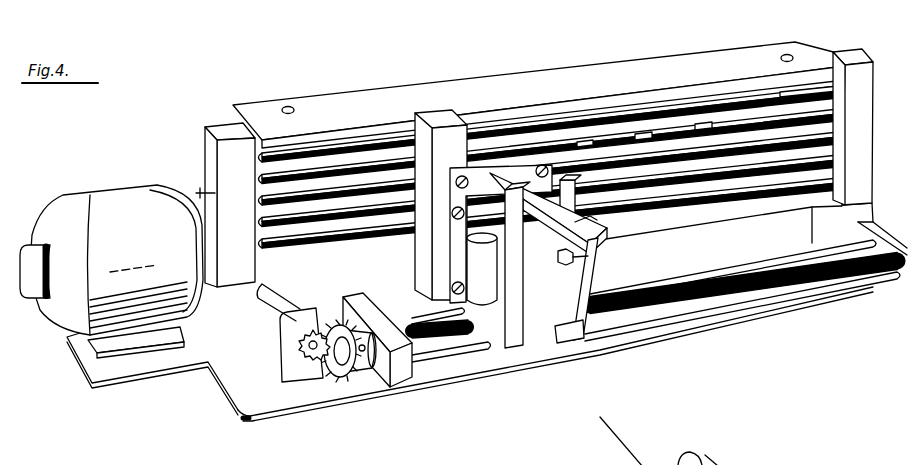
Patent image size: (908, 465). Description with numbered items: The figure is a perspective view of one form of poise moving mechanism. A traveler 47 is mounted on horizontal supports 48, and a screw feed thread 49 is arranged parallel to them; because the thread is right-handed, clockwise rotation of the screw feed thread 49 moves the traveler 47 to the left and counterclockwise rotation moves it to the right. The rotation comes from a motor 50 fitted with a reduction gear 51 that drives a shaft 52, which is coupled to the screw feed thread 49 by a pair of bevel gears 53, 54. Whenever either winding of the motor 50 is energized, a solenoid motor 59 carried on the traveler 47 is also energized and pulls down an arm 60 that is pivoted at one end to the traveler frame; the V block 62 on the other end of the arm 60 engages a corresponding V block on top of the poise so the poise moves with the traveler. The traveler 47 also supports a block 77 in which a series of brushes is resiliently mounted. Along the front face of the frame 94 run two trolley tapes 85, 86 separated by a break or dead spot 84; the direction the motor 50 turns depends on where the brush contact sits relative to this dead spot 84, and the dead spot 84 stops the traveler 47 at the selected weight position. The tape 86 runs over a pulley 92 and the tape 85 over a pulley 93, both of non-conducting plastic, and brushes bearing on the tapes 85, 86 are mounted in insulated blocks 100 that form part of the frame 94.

The traveler 47 is at (551, 299).
The horizontal supports 48 is at (785, 261).
The screw feed thread 49 is at (805, 283).
The motor 50 is at (143, 245).
The reduction gear 51 is at (200, 193).
The shaft 52 is at (277, 302).
The bevel gear 53 is at (301, 352).
The bevel gear 54 is at (328, 362).
The solenoid motor 59 is at (483, 267).
The arm 60 is at (558, 207).
The V block 62 is at (595, 290).
The block 77 is at (461, 152).
The break or dead spot 84 is at (643, 138).
The trolley tape 85 is at (583, 143).
The trolley tape 86 is at (702, 125).
The pulley 92 is at (800, 87).
The pulley 93 is at (297, 148).
The frame 94 is at (352, 105).
The insulated blocks 100 is at (250, 195).